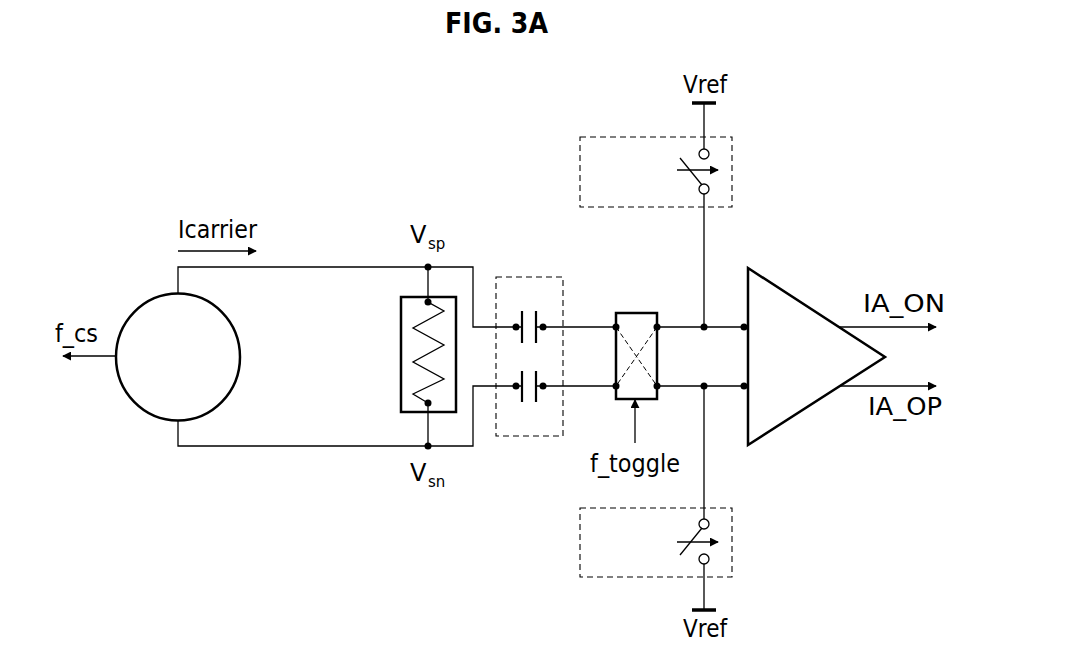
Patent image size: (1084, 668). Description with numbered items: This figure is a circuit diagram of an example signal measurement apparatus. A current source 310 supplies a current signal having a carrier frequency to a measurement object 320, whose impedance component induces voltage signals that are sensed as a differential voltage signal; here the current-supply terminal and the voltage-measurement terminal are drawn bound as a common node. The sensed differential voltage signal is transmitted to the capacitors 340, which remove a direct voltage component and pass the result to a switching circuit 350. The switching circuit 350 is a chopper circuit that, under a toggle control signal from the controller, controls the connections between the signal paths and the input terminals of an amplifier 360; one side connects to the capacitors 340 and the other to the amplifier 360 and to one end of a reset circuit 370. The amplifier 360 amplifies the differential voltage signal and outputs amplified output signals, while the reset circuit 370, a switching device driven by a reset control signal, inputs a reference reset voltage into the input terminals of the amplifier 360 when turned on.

The current source 310 is at (135, 311).
The measurement object 320 is at (400, 296).
The capacitors Cinp and Cinn 340 is at (530, 277).
The switching circuit 350 is at (636, 313).
The amplifier 360 is at (781, 285).
The reset circuit 370 is at (735, 170).